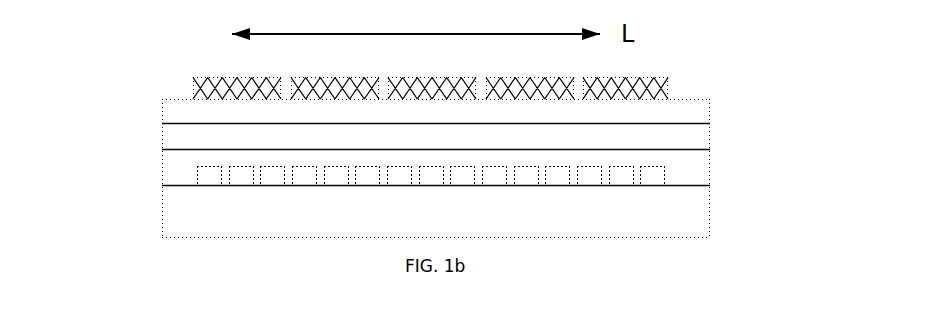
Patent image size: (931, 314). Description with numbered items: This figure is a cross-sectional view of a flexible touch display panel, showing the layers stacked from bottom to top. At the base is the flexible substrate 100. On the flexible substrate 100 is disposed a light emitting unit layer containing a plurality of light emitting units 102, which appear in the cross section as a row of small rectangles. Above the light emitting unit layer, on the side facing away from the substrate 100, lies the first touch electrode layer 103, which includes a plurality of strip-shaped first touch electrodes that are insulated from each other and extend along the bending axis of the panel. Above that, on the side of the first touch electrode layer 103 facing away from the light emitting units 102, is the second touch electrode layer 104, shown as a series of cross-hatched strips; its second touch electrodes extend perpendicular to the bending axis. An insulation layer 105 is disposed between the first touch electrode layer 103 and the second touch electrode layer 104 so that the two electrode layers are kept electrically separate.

The flexible substrate 100 is at (710, 210).
The light emitting units 102 is at (657, 177).
The first touch electrode layer 103 is at (668, 138).
The second touch electrode layer 104 is at (668, 86).
The insulation layer 105 is at (158, 140).